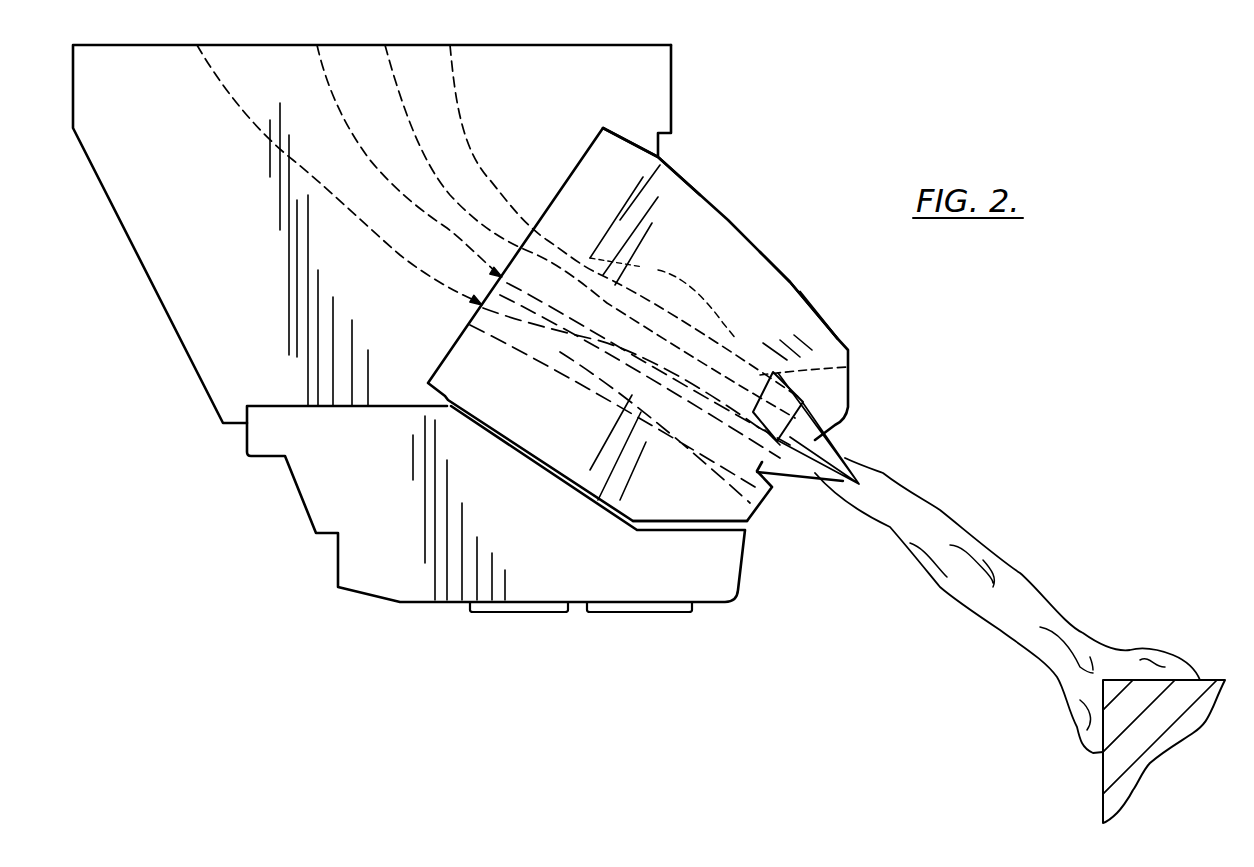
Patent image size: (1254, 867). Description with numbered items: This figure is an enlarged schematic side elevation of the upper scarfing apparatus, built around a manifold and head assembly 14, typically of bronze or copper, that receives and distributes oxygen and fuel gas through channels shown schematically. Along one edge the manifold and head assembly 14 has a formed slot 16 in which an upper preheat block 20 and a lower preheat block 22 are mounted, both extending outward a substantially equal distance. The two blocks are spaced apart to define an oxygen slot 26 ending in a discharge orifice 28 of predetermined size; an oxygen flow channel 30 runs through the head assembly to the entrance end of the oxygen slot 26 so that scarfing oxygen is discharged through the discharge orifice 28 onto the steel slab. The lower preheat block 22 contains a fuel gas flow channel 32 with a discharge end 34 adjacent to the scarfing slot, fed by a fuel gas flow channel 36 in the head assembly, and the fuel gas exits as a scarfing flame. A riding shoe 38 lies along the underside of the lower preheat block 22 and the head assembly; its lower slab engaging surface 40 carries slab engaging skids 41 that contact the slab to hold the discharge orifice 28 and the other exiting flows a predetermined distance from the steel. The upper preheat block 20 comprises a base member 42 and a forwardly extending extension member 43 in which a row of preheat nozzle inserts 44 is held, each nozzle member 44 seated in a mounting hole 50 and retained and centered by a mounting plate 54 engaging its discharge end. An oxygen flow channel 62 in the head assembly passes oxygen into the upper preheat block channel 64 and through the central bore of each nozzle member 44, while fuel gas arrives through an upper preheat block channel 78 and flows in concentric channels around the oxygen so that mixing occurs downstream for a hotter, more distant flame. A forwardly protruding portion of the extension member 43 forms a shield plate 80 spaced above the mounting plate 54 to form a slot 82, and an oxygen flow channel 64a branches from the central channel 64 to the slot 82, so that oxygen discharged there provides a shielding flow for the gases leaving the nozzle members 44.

The manifold and head assembly 14 is at (277, 44).
The formed slot 16 is at (671, 83).
The upper preheat block 20 is at (738, 210).
The lower preheat block 22 is at (711, 517).
The oxygen slot 26 is at (597, 340).
The discharge orifice 28 is at (803, 463).
The oxygen flow channel 30 is at (337, 107).
The fuel gas flow channel 32 is at (707, 447).
The discharge end 34 is at (765, 483).
The fuel gas flow channel 36 is at (240, 110).
The riding shoe 38 is at (317, 510).
The lower slab engaging surface 40 is at (437, 593).
The slab engaging skids 41 is at (617, 613).
The base member 42 is at (667, 160).
The extension member 43 is at (792, 284).
The preheat nozzle insert 44 is at (698, 335).
The mounting hole 50 is at (847, 367).
The mounting plate 54 is at (837, 423).
The oxygen flow channel 62 is at (457, 97).
The upper preheat block channel 64 is at (553, 250).
The oxygen flow channel 64a is at (658, 270).
The upper preheat block channel 78 is at (403, 97).
The shield plate 80 is at (840, 337).
The slot 82 is at (807, 400).